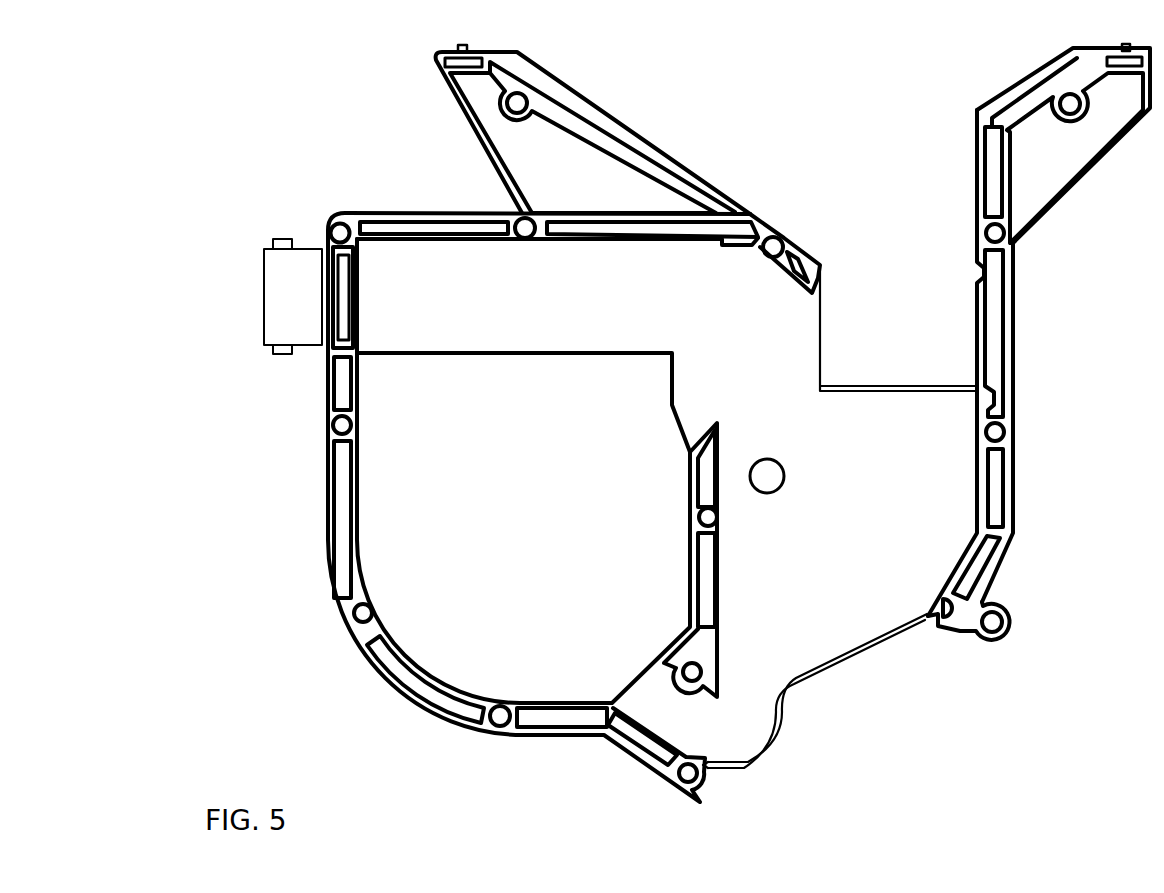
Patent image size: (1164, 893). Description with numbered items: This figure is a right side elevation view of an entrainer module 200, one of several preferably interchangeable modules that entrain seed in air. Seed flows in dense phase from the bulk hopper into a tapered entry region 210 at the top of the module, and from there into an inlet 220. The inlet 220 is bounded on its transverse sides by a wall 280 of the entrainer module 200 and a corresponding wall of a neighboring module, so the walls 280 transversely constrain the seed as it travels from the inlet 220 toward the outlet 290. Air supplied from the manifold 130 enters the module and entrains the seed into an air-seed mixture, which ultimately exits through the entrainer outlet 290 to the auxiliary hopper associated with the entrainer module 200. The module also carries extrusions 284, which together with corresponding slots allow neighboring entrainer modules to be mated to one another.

The entrainer module 200 is at (153, 132).
The tapered entry region 210 is at (898, 117).
The inlet 220 is at (907, 418).
The wall 280 is at (845, 578).
The extrusion 284 is at (562, 85).
The entrainer outlet 290 is at (262, 290).
The manifold 130 is at (410, 520).